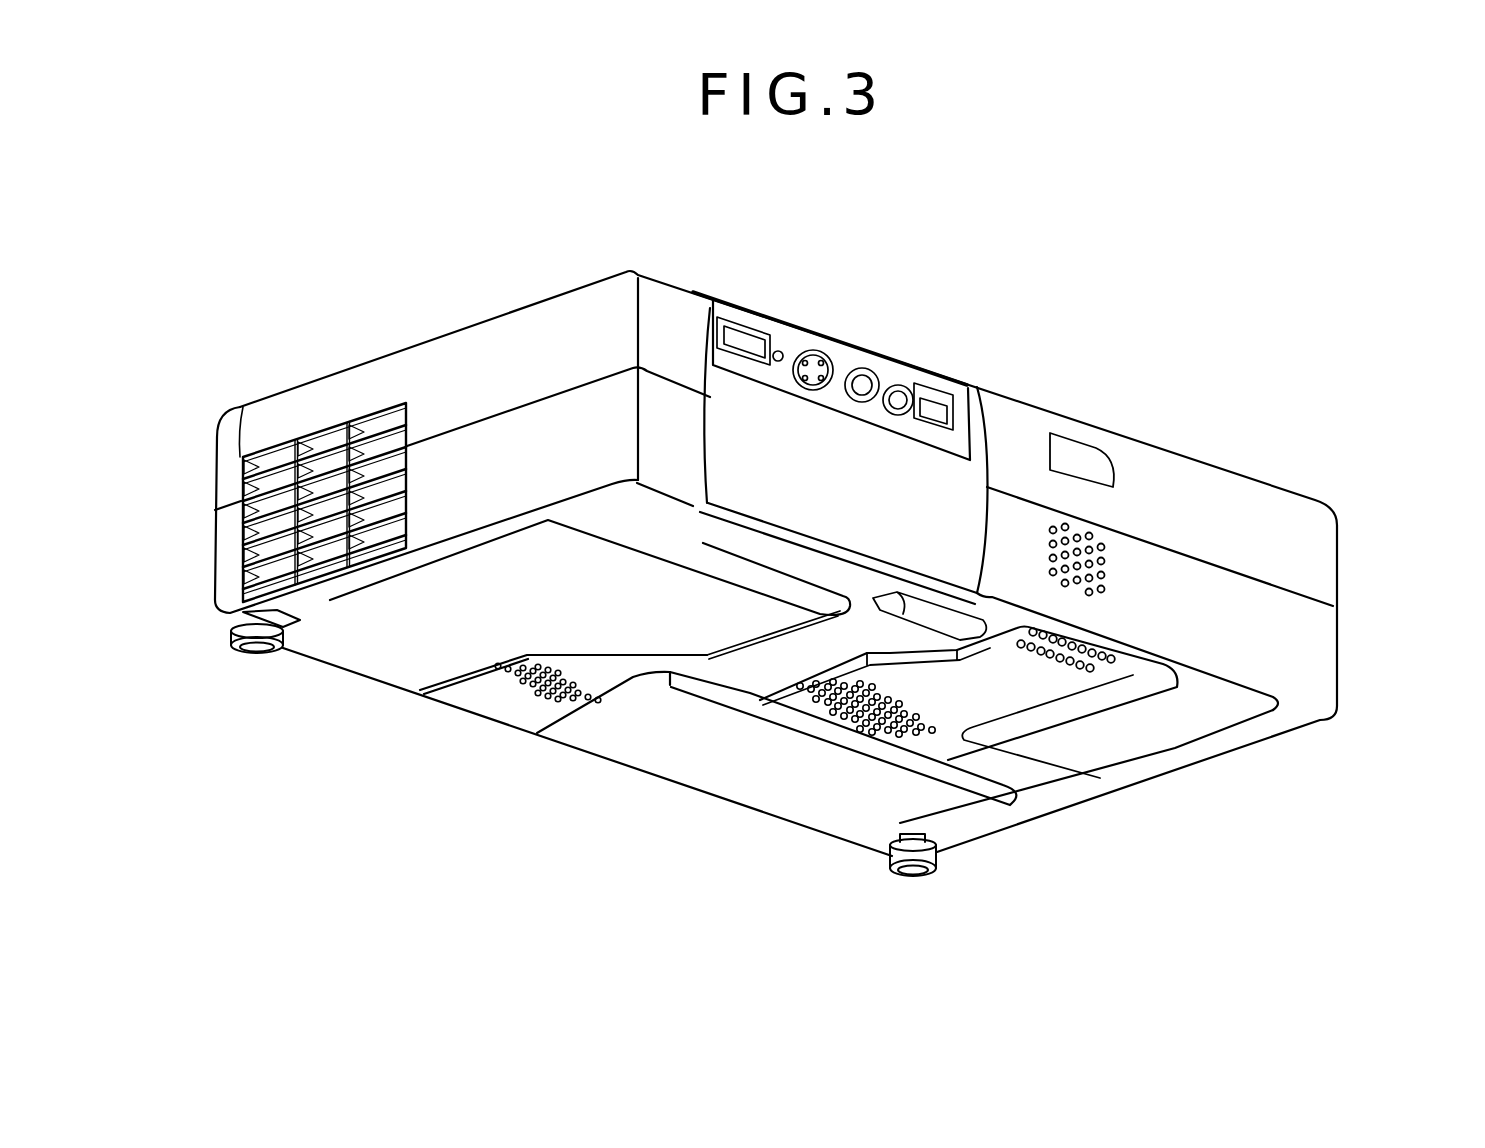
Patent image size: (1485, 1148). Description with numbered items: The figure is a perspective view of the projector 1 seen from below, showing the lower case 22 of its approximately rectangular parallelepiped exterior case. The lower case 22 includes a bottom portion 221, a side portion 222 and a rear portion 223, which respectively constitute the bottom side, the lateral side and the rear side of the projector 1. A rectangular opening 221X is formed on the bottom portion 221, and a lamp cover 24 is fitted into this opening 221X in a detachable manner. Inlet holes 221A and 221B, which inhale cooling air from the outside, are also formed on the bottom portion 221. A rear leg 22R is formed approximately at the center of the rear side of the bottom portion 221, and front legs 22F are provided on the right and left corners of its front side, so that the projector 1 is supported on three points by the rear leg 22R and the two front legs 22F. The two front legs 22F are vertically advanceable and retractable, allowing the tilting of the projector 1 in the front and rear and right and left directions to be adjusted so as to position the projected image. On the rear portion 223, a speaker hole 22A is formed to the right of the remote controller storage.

The projector 1 is at (1200, 330).
The lower case 22 is at (1320, 678).
The bottom portion 221 is at (1283, 723).
The inlet hole 221A is at (873, 733).
The inlet hole 221B is at (533, 697).
The opening 221X is at (1197, 743).
The side portion 222 is at (457, 490).
The rear portion 223 is at (1323, 635).
The speaker hole 22A is at (1110, 550).
The front leg 22F is at (232, 638).
The rear leg 22R is at (990, 600).
The lamp cover 24 is at (1113, 742).